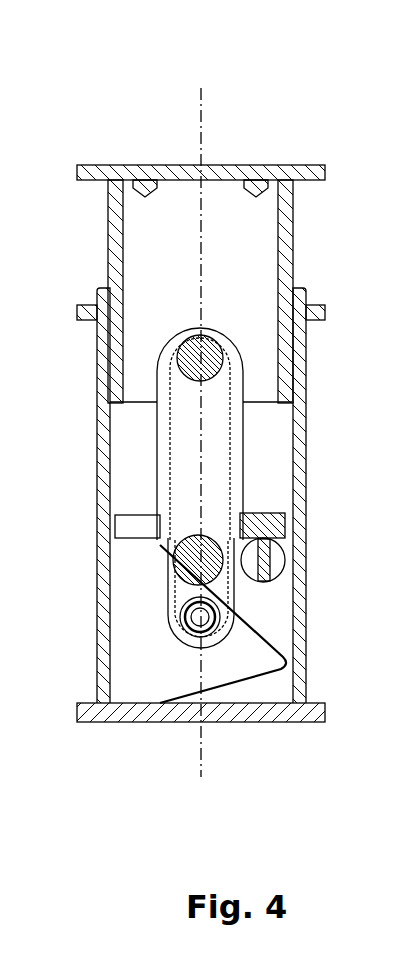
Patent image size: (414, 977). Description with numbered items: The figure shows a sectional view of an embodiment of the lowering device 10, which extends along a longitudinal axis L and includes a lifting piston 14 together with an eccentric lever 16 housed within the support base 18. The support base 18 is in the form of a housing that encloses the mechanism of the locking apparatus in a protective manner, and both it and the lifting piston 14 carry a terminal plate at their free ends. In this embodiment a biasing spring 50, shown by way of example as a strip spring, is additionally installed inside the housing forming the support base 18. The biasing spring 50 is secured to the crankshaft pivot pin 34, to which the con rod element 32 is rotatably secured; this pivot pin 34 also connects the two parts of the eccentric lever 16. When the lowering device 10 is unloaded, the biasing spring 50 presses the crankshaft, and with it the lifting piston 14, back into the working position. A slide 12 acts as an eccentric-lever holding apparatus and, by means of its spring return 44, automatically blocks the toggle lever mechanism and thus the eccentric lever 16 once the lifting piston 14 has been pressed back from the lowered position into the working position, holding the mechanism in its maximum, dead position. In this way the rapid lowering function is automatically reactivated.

The lowering device 10 is at (80, 98).
The longitudinal axis L is at (204, 125).
The slide 12 is at (127, 528).
The lifting piston 14 is at (287, 249).
The eccentric lever 16 is at (183, 607).
The support base 18 is at (100, 457).
The con rod element 32 is at (243, 474).
The crankshaft pivot pin 34 is at (174, 562).
The spring return 44 is at (286, 578).
The biasing spring 50 is at (290, 663).